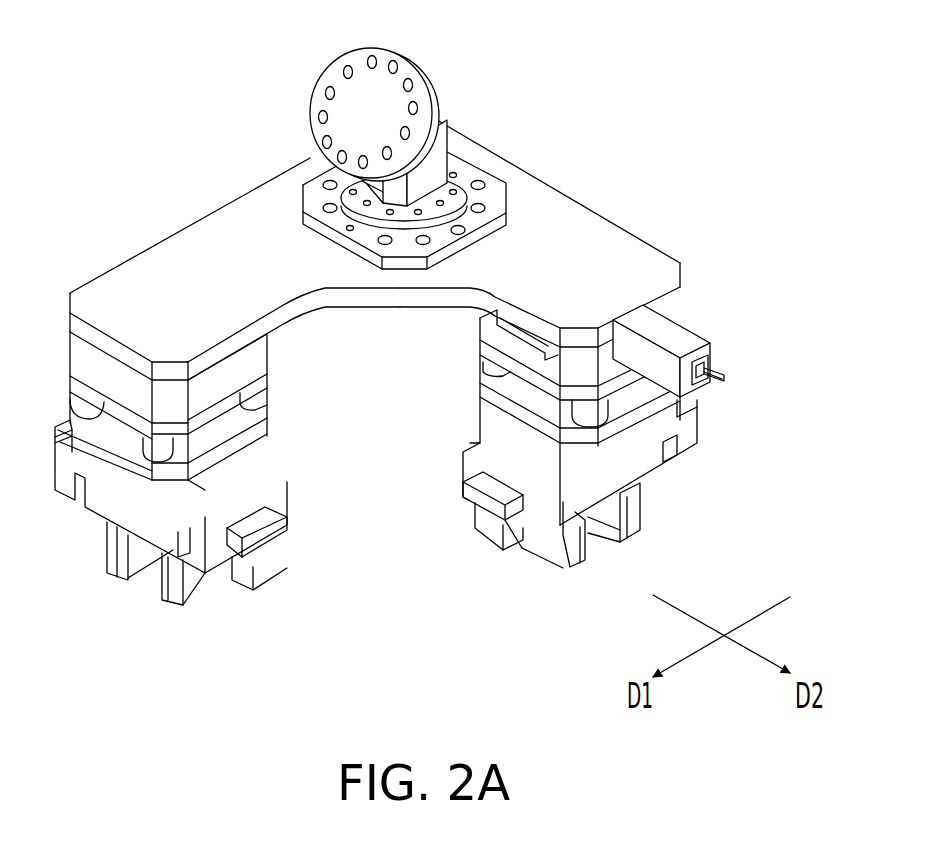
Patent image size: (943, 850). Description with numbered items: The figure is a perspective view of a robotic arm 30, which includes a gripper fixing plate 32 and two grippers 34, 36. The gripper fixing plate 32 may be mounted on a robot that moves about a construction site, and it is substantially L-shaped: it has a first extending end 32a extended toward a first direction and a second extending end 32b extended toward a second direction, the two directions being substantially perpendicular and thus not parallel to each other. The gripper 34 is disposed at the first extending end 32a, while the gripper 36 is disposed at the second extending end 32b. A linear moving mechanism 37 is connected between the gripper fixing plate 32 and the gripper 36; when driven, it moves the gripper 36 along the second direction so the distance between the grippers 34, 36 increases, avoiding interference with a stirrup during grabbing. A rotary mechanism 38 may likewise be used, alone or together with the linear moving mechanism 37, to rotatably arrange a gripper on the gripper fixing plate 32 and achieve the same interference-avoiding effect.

The robotic arm 30 is at (130, 134).
The gripper fixing plate 32 is at (716, 30).
The first extending end 32a is at (165, 262).
The second extending end 32b is at (632, 256).
The gripper 34 is at (110, 498).
The gripper 36 is at (637, 465).
The linear moving mechanism 37 is at (688, 343).
The rotary mechanism 38 is at (255, 359).